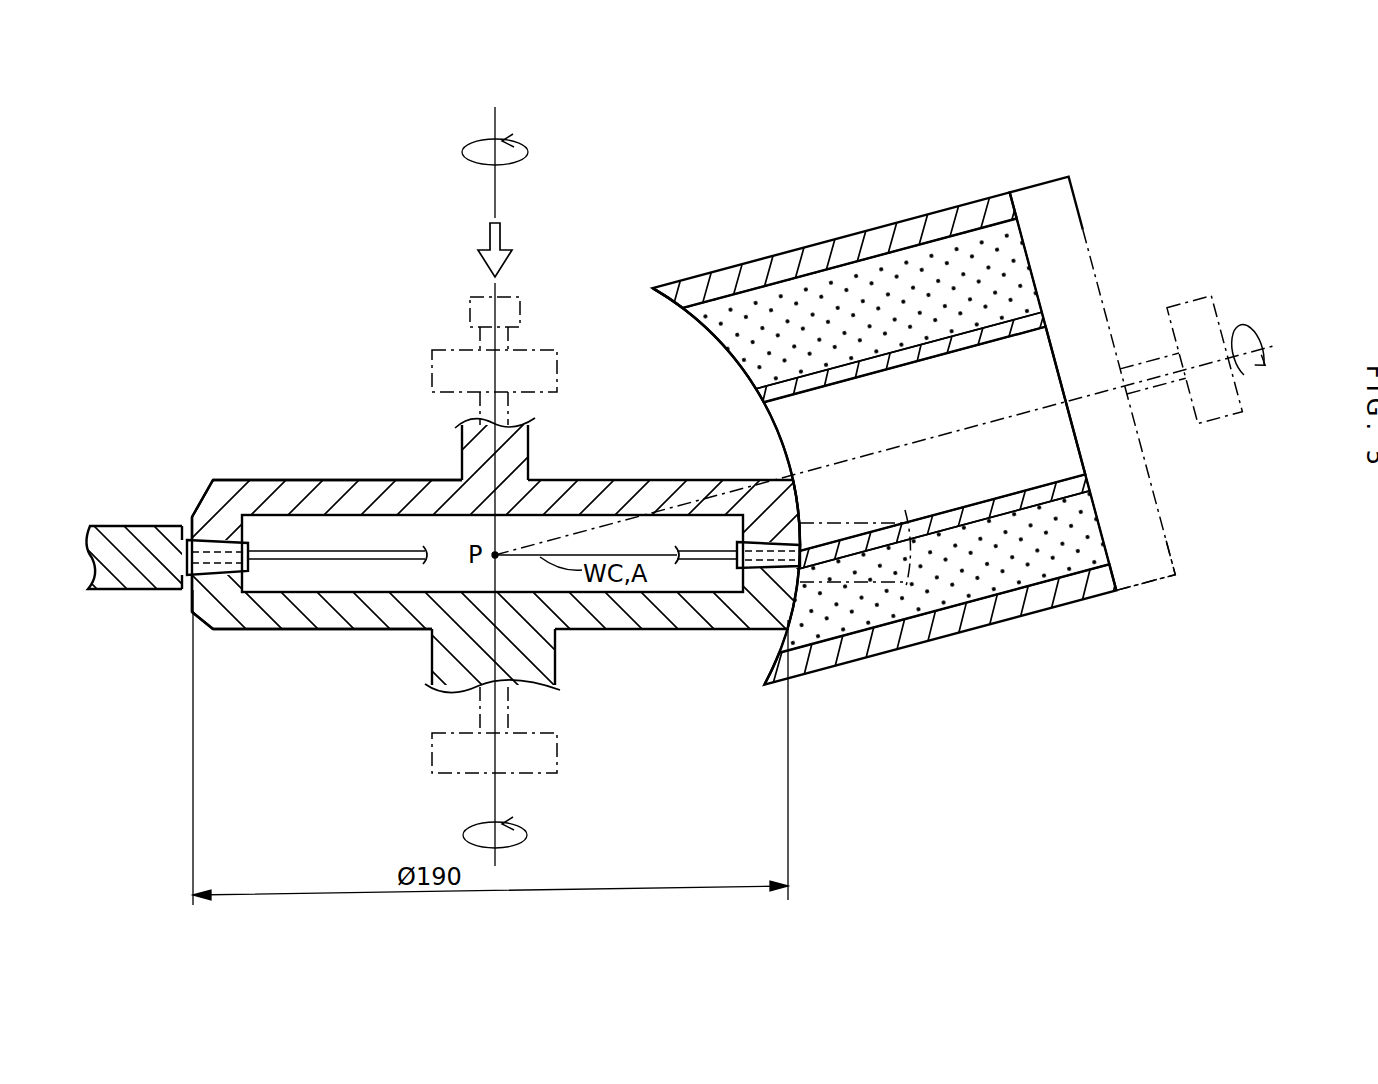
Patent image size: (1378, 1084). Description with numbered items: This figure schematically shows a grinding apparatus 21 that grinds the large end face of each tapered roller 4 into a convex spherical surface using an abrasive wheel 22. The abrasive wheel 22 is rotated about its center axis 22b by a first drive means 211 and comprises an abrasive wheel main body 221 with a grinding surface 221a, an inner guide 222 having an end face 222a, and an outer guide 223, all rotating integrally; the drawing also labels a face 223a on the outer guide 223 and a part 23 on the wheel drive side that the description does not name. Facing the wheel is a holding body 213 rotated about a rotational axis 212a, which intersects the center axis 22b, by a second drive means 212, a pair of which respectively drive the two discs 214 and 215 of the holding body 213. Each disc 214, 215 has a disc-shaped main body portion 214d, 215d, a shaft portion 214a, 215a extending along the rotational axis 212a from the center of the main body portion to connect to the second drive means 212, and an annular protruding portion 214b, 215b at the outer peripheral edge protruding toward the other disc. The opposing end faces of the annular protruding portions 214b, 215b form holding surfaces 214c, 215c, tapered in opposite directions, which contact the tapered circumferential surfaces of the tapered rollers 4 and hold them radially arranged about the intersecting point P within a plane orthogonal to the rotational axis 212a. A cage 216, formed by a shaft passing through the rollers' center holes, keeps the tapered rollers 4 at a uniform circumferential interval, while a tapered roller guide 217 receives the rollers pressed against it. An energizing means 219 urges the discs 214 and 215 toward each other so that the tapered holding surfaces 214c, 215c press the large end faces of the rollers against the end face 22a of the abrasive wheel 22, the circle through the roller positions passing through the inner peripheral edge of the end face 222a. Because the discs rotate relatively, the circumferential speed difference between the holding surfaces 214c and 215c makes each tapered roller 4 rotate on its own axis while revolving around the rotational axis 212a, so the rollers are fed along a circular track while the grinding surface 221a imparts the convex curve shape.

The grinding apparatus 21 is at (318, 309).
The tapered roller 4 is at (205, 578).
The abrasive wheel 22 is at (768, 120).
The end face of the abrasive wheel 22a is at (628, 335).
The center axis of the abrasive wheel 22b is at (1085, 373).
The spindle unit 23 is at (1172, 553).
The first drive means 211 is at (1207, 425).
The second drive means 212 is at (443, 350).
The rotational axis 212a is at (460, 448).
The holding body 213 is at (342, 702).
The disc 214 is at (313, 507).
The shaft portion 214a is at (510, 458).
The annular protruding portion 214b is at (220, 523).
The holding surface 214c is at (168, 538).
The disc-shaped main body portion 214d is at (345, 487).
The disc 215 is at (256, 627).
The shaft portion 215a is at (548, 653).
The annular protruding portion 215b is at (228, 590).
The holding surface 215c is at (182, 575).
The disc-shaped main body portion 215d is at (367, 623).
The cage 216 is at (333, 548).
The tapered roller guide 217 is at (138, 533).
The energizing means 219 is at (478, 297).
The abrasive wheel main body 221 is at (832, 303).
The grinding surface 221a is at (728, 353).
The inner guide 222 is at (856, 240).
The end face of the inner guide 222a is at (758, 393).
The outer guide 223 is at (897, 355).
The bonding layer surface 223a is at (673, 300).